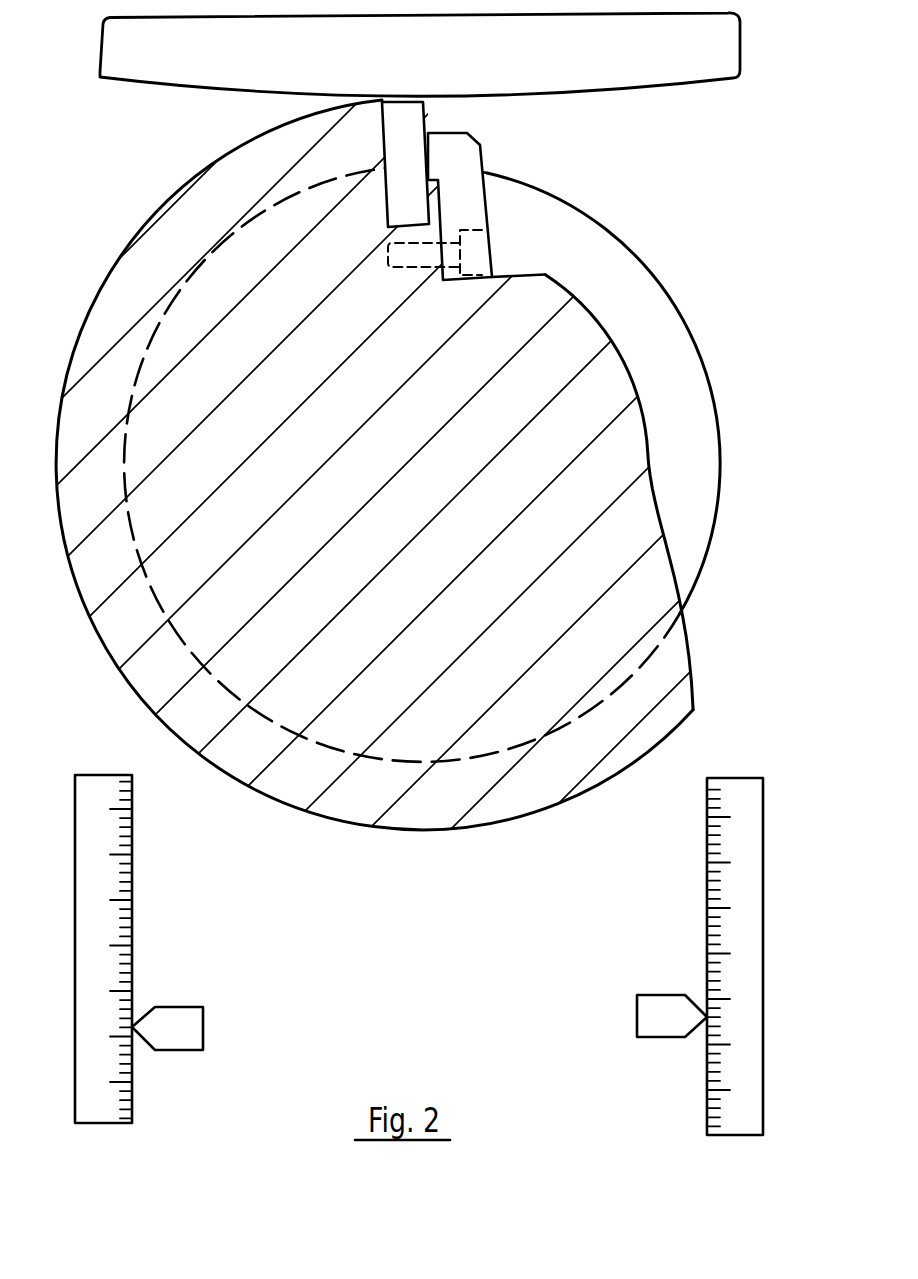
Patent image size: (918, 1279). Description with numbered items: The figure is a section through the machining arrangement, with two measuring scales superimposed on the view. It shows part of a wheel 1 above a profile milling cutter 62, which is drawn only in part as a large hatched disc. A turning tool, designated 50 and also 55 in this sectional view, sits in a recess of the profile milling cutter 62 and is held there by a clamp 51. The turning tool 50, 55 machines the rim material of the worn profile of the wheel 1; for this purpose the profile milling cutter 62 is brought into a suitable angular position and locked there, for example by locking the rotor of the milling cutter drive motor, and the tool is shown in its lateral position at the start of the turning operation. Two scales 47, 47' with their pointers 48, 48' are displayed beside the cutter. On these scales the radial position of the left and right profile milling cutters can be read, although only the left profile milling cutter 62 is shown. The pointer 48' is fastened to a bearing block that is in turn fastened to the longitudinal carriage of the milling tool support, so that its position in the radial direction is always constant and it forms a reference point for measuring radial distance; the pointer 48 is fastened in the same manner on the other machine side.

The wheel 1 is at (263, 53).
The profile milling cutter 62 is at (170, 248).
The turning tool 50 is at (481, 188).
The turning tool 55 is at (410, 117).
The clamp 51 is at (468, 187).
The scale 47 is at (703, 956).
The scale 47' is at (140, 949).
The pointer 48 is at (644, 1009).
The pointer 48' is at (202, 1024).